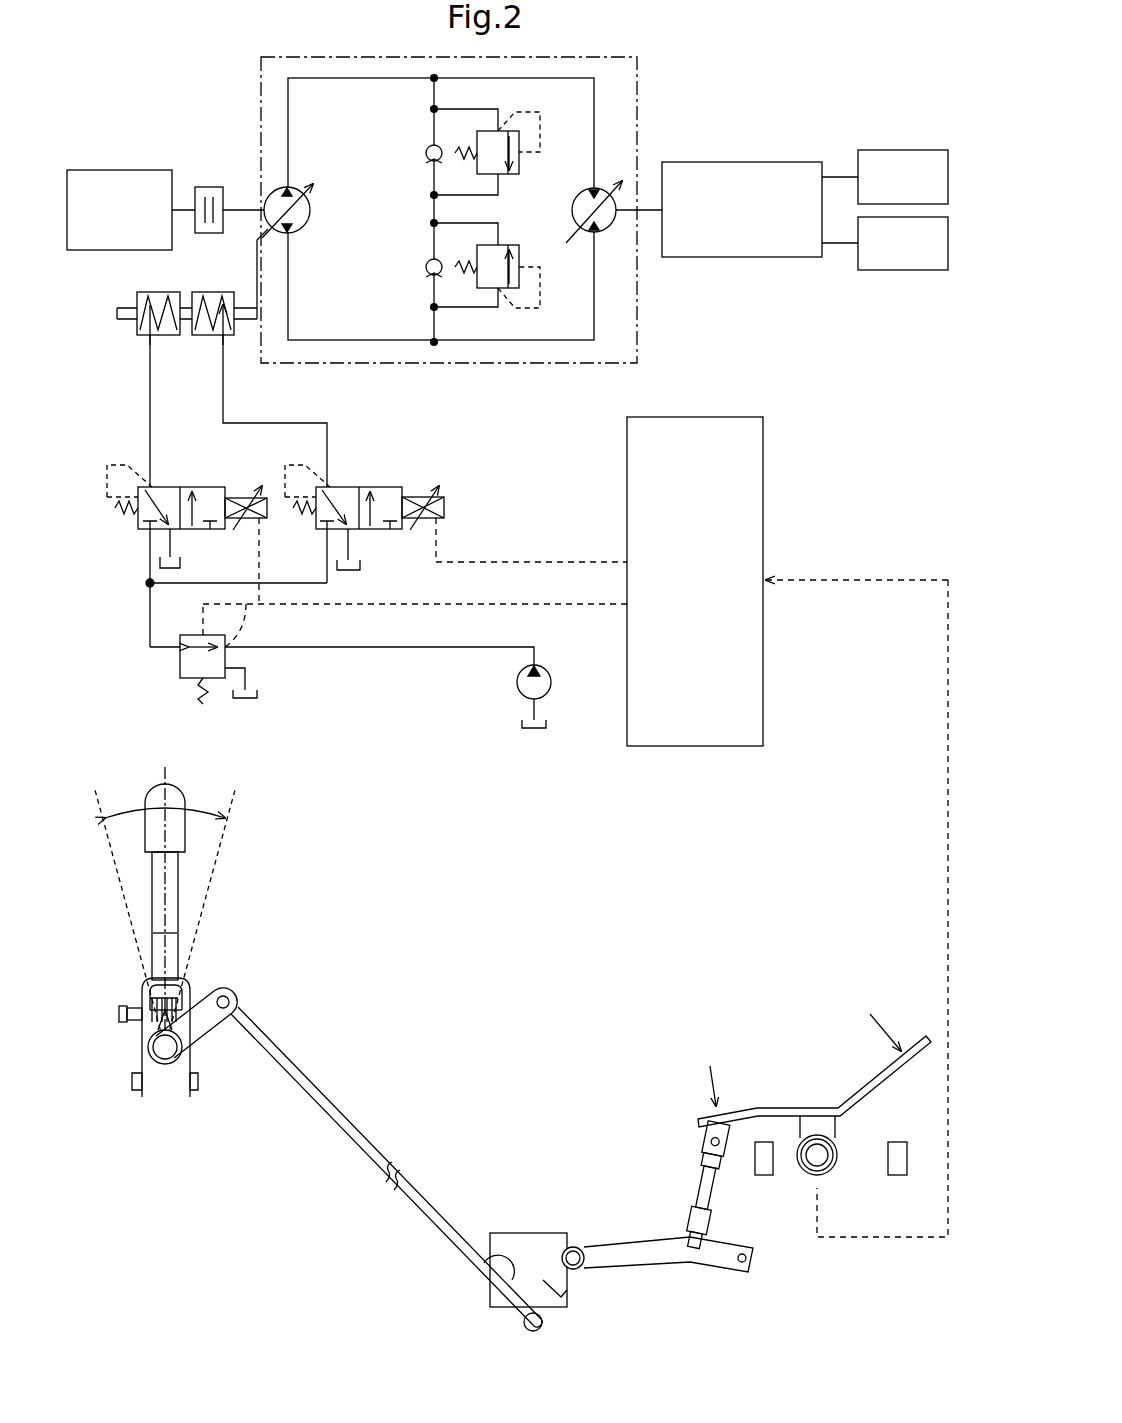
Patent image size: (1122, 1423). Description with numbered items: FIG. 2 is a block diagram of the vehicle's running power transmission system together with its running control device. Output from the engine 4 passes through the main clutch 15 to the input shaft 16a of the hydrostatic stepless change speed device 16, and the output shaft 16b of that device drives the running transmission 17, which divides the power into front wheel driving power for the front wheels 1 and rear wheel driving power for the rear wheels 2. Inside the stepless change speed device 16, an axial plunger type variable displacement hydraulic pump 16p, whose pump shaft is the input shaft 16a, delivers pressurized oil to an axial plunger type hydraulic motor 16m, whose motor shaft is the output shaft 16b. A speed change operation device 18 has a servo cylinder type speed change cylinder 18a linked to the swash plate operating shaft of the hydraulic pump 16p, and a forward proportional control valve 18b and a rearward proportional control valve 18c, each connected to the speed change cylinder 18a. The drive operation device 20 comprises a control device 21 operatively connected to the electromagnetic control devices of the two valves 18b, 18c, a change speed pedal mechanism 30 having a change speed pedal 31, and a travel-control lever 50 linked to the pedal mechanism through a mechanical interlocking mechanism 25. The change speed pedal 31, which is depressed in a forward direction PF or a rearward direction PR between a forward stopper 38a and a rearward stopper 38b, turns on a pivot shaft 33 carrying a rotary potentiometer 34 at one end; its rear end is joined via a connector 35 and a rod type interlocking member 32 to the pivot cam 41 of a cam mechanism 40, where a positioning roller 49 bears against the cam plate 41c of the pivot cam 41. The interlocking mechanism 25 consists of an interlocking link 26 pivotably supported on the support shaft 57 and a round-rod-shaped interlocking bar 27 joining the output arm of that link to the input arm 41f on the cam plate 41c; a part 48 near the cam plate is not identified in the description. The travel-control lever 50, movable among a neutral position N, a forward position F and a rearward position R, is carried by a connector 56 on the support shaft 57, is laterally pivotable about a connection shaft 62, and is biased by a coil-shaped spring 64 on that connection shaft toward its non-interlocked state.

The front wheels 1 is at (897, 150).
The rear wheels 2 is at (898, 270).
The engine 4 is at (118, 170).
The main clutch 15 is at (209, 187).
The hydrostatic stepless change speed device 16 is at (261, 93).
The input shaft 16a is at (243, 222).
The output shaft 16b is at (620, 220).
The hydraulic motor 16m is at (586, 199).
The variable displacement hydraulic pump 16p is at (306, 222).
The running transmission 17 is at (710, 162).
The speed change operation device 18 is at (320, 662).
The speed change cylinder 18a is at (140, 332).
The forward proportional control valve 18b is at (175, 487).
The rearward proportional control valve 18c is at (387, 487).
The drive operation device 20 is at (553, 900).
The control device 21 is at (763, 494).
The interlocking mechanism 25 is at (353, 1205).
The interlocking link 26 is at (203, 1037).
The interlocking bar 27 is at (340, 1115).
The change speed pedal mechanism 30 is at (611, 1055).
The change speed pedal 31 is at (793, 1108).
The interlocking member 32 is at (720, 1200).
The pivot shaft 33 is at (820, 1162).
The rotary potentiometer 34 is at (840, 1157).
The connector 35 is at (708, 1143).
The forward stopper 38a is at (905, 1162).
The rearward stopper 38b is at (765, 1177).
The cam mechanism 40 is at (604, 1227).
The pivot cam 41 is at (653, 1281).
The cam plate 41c is at (540, 1238).
The input arm 41f is at (553, 1305).
The pivot pin 48 is at (574, 1247).
The positioning roller 49 is at (493, 1257).
The travel-control lever 50 is at (178, 893).
The connector 56 is at (160, 990).
The support shaft 57 is at (163, 1060).
The connection shaft 62 is at (125, 1013).
The spring 64 is at (148, 998).